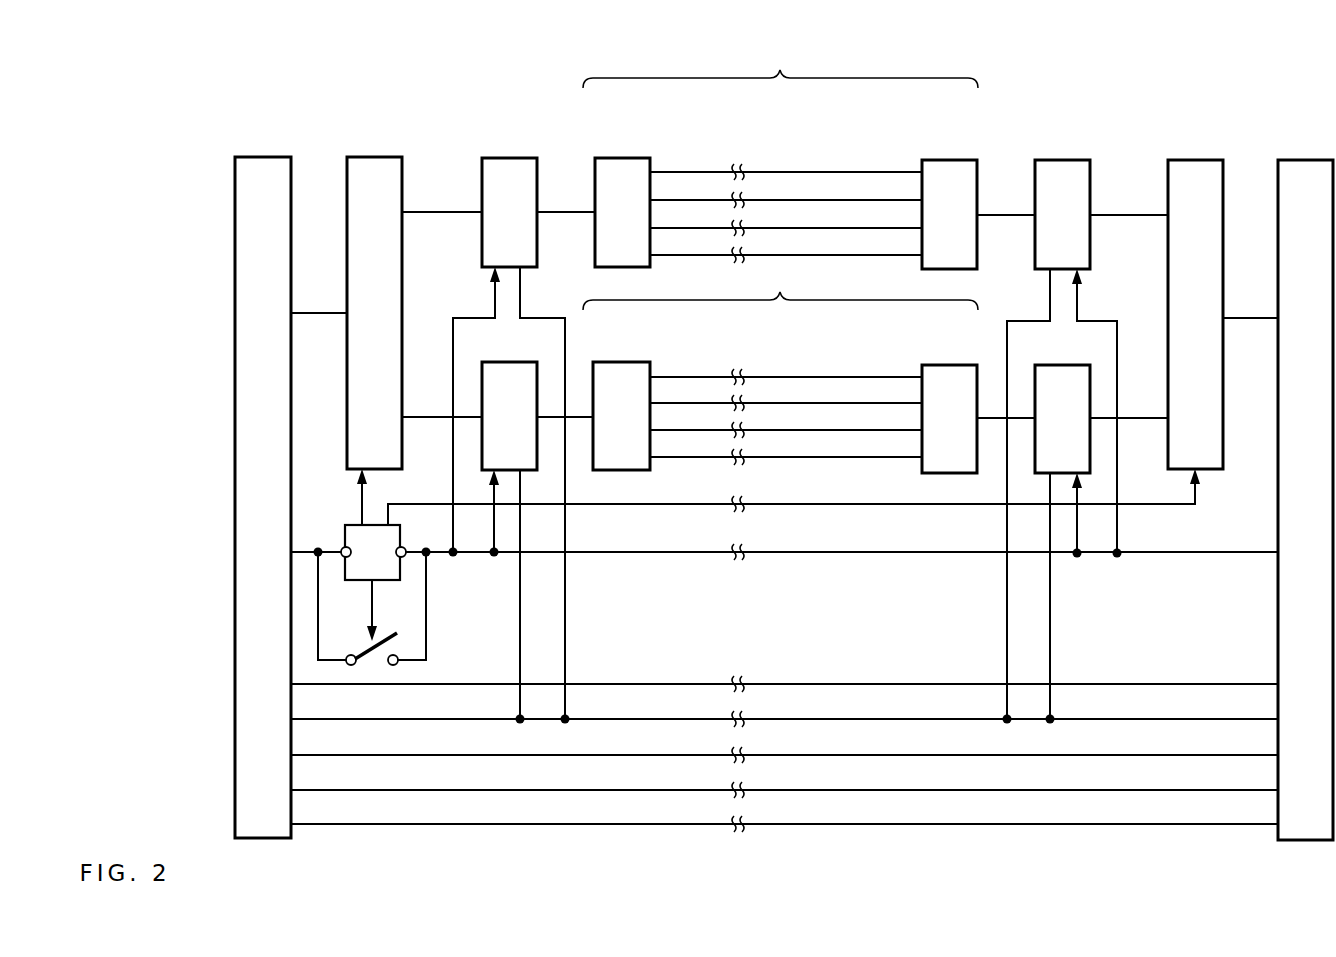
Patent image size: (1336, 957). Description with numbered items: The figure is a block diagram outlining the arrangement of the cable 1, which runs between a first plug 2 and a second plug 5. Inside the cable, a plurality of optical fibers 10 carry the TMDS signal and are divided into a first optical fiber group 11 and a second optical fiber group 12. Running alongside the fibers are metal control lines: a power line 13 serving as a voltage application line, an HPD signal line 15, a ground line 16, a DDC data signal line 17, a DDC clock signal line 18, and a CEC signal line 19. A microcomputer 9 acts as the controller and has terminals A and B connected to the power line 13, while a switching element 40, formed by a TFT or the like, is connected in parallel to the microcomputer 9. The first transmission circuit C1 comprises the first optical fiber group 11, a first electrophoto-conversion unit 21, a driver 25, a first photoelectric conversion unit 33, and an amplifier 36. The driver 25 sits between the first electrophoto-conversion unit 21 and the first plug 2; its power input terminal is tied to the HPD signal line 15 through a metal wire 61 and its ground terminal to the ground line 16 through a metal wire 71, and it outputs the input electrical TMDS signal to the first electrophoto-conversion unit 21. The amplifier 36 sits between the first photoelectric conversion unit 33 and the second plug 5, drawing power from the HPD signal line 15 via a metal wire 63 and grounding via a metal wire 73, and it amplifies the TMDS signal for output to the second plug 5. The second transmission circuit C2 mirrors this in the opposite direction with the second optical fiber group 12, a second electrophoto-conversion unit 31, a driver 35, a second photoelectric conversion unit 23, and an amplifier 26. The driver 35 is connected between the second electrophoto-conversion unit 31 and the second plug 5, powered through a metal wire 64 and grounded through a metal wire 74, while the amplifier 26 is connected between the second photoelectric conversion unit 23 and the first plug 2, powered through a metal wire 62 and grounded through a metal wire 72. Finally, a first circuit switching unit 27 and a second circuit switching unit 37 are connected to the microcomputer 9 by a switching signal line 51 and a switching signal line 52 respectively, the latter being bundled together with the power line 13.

The cable 1 is at (1092, 100).
The first plug 2 is at (265, 157).
The second plug 5 is at (1300, 160).
The microcomputer 9 is at (347, 525).
The optical fibers 10 is at (890, 255).
The first optical fiber group 11 is at (805, 360).
The second optical fiber group 12 is at (805, 158).
The power line 13 is at (712, 554).
The HPD signal line 15 is at (813, 686).
The ground line 16 is at (873, 721).
The DDC data signal line 17 is at (932, 757).
The DDC clock signal line 18 is at (990, 792).
The CEC signal line 19 is at (1050, 826).
The first electrophoto-conversion unit 21 is at (620, 362).
The second photoelectric conversion unit 23 is at (620, 158).
The driver 25 is at (510, 362).
The amplifier 26 is at (513, 158).
The first circuit switching unit 27 is at (375, 157).
The second electrophoto-conversion unit 31 is at (950, 160).
The first photoelectric conversion unit 33 is at (950, 365).
The driver 35 is at (1062, 160).
The amplifier 36 is at (1062, 365).
The second circuit switching unit 37 is at (1192, 160).
The switching element 40 is at (377, 675).
The switching signal line 51 is at (360, 492).
The switching signal line 52 is at (893, 505).
The metal wire 61 is at (494, 530).
The metal wire 62 is at (453, 530).
The metal wire 63 is at (1075, 533).
The metal wire 64 is at (1116, 533).
The metal wire 71 is at (521, 576).
The metal wire 72 is at (563, 620).
The metal wire 73 is at (1050, 583).
The metal wire 74 is at (1005, 625).
The terminal A is at (341, 548).
The terminal B is at (403, 560).
The first transmission circuit C1 is at (780, 286).
The second transmission circuit C2 is at (780, 65).